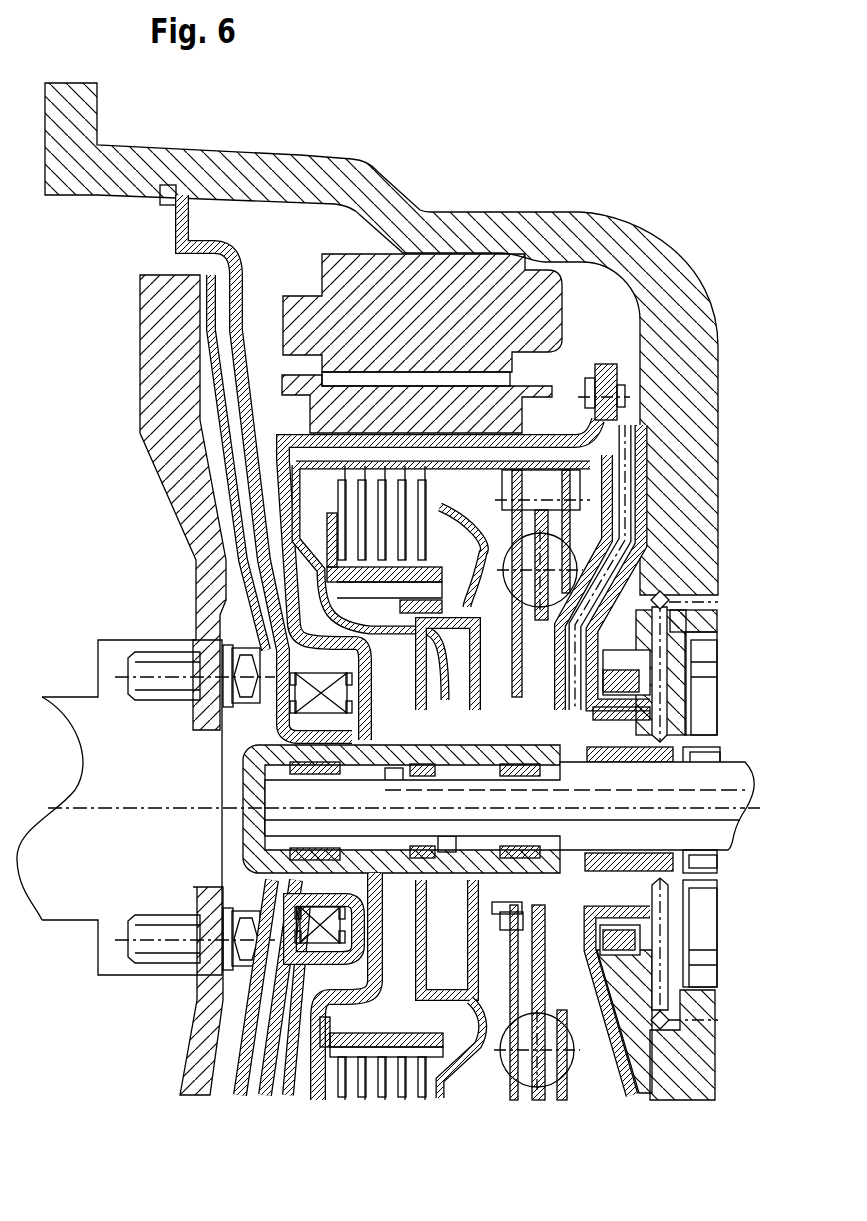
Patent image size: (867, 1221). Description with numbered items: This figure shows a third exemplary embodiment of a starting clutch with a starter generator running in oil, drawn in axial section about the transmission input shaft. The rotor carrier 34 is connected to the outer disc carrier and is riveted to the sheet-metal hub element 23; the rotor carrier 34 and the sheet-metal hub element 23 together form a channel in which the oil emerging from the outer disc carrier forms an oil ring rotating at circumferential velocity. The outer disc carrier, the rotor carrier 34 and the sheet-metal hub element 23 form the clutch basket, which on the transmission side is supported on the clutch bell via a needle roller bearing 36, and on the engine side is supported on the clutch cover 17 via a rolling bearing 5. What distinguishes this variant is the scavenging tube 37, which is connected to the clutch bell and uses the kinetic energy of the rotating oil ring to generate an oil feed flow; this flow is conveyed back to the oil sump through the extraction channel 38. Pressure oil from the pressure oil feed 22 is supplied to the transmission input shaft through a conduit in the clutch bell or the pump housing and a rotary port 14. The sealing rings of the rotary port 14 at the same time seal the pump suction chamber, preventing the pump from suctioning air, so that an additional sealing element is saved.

The rolling bearing 5 is at (300, 690).
The rotary port 14 is at (630, 845).
The clutch cover 17 is at (180, 228).
The pressure oil feed 22 is at (712, 1016).
The sheet-metal hub element 23 is at (642, 455).
The rotor carrier 34 is at (600, 420).
The needle roller bearing 36 is at (630, 697).
The scavenging tube 37 is at (617, 493).
The extraction channel 38 is at (718, 602).